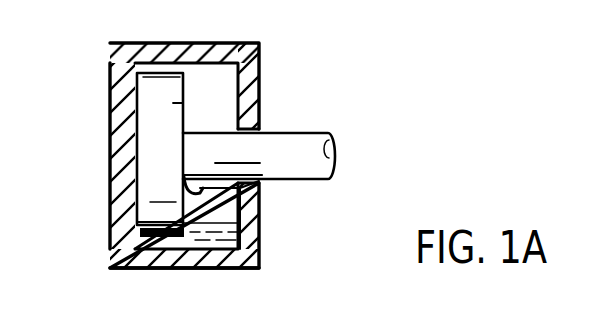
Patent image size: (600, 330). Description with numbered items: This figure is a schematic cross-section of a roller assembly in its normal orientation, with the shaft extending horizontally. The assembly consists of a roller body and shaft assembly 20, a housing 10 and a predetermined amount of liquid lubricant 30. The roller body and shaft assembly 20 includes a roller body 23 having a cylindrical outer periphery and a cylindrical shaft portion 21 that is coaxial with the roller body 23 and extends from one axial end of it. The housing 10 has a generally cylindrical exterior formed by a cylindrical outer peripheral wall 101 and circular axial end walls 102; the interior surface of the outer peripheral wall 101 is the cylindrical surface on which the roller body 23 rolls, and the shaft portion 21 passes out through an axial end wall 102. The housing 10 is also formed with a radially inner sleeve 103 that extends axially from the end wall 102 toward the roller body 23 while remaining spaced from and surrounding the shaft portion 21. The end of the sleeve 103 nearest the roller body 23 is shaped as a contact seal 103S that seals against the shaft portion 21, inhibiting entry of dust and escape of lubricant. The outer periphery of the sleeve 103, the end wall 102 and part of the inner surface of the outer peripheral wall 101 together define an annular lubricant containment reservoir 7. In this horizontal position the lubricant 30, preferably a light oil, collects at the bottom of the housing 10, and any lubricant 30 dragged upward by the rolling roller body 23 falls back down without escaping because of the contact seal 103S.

The housing 10 is at (110, 169).
The outer peripheral wall 101 is at (209, 250).
The axial end wall 102 is at (118, 207).
The sleeve 103 is at (195, 128).
The contact seal 103S is at (184, 178).
The annular lubricant containment reservoir 7 is at (209, 102).
The roller body and shaft assembly 20 is at (262, 136).
The shaft portion 21 is at (305, 168).
The roller body 23 is at (157, 106).
The liquid lubricant 30 is at (252, 232).